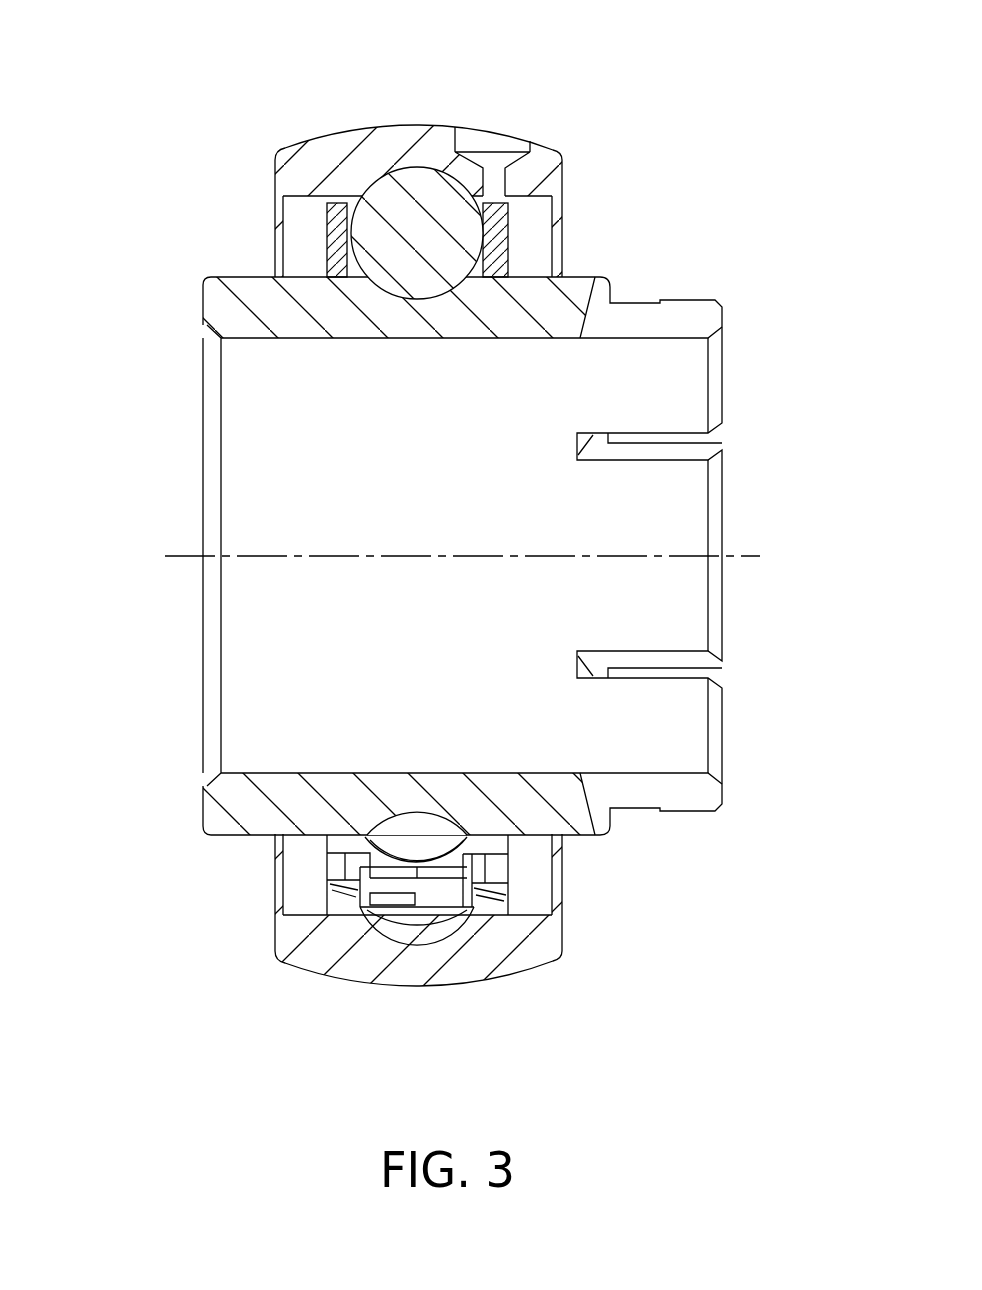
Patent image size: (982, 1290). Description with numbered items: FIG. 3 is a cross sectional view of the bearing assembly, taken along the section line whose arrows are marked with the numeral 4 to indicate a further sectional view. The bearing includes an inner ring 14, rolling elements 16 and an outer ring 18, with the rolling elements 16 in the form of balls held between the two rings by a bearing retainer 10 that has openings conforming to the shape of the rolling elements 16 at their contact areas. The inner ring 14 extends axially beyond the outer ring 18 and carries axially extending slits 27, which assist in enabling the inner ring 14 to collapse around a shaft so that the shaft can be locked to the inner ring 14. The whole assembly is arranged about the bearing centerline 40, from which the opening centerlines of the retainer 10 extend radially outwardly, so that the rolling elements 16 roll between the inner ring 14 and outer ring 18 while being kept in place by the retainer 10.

The bearing retainer 10 is at (508, 226).
The inner ring 14 is at (308, 338).
The rolling elements 16 is at (403, 240).
The outer ring 18 is at (275, 153).
The axially extending slits 27 is at (723, 433).
The bearing centerline 40 is at (180, 556).
The section line 4- 4 is at (495, 40).